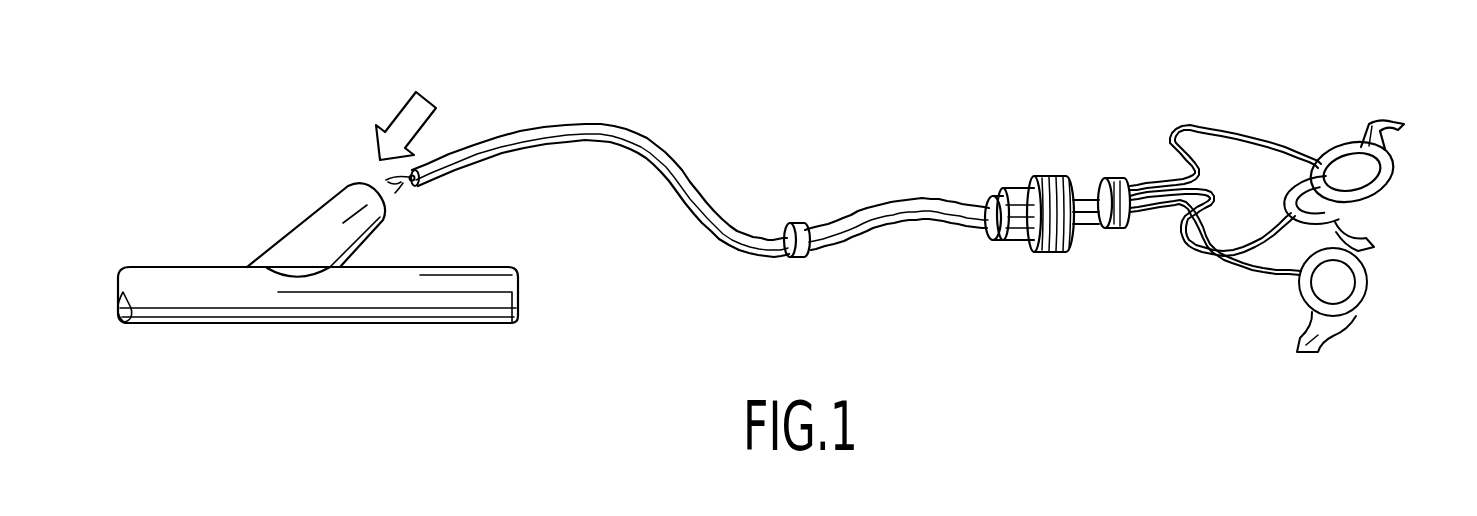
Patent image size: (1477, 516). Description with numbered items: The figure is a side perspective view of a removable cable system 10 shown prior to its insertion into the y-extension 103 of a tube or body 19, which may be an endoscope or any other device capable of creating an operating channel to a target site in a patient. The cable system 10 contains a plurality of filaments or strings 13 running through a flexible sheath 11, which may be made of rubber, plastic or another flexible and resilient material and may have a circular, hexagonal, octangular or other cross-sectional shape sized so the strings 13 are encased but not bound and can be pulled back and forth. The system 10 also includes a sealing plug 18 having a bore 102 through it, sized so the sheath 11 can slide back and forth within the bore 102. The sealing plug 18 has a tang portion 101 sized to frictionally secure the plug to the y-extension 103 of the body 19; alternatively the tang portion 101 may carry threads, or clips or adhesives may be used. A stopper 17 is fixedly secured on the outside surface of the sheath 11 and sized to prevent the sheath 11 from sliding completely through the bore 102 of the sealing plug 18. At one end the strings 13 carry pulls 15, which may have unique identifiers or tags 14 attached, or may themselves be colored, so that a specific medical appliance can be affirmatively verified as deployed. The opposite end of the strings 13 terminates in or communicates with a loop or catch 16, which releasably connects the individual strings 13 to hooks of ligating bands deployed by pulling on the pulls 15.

The removable cable system 10 is at (725, 270).
The flexible sheath 11 is at (855, 232).
The strings 13 is at (1262, 140).
The tags 14 is at (1383, 125).
The pulls 15 is at (1387, 173).
The loop or catch 16 is at (400, 192).
The stopper 17 is at (793, 258).
The sealing plug 18 is at (1035, 177).
The body 19 is at (360, 325).
The tang portion 101 is at (1003, 188).
The bore 102 is at (985, 232).
The y-extension 103 is at (323, 217).